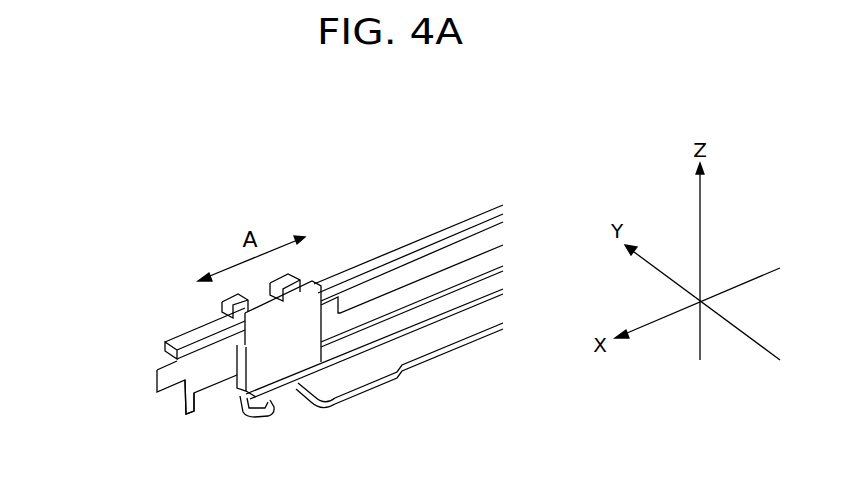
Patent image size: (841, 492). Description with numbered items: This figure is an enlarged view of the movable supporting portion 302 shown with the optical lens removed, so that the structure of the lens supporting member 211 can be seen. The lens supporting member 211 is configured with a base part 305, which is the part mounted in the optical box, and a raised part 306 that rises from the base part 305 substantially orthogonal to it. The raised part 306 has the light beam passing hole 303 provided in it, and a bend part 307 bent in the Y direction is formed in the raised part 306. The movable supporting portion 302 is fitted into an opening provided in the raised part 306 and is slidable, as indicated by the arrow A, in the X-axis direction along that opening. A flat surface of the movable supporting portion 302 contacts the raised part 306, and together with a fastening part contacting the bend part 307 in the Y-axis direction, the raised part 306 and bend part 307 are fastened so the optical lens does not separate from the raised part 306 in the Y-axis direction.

The lens supporting member 211 is at (333, 403).
The movable supporting portion 302 is at (268, 357).
The light beam passing hole 303 is at (460, 275).
The base part 305 is at (370, 368).
The raised part 306 is at (200, 392).
The bend part 307 is at (187, 342).